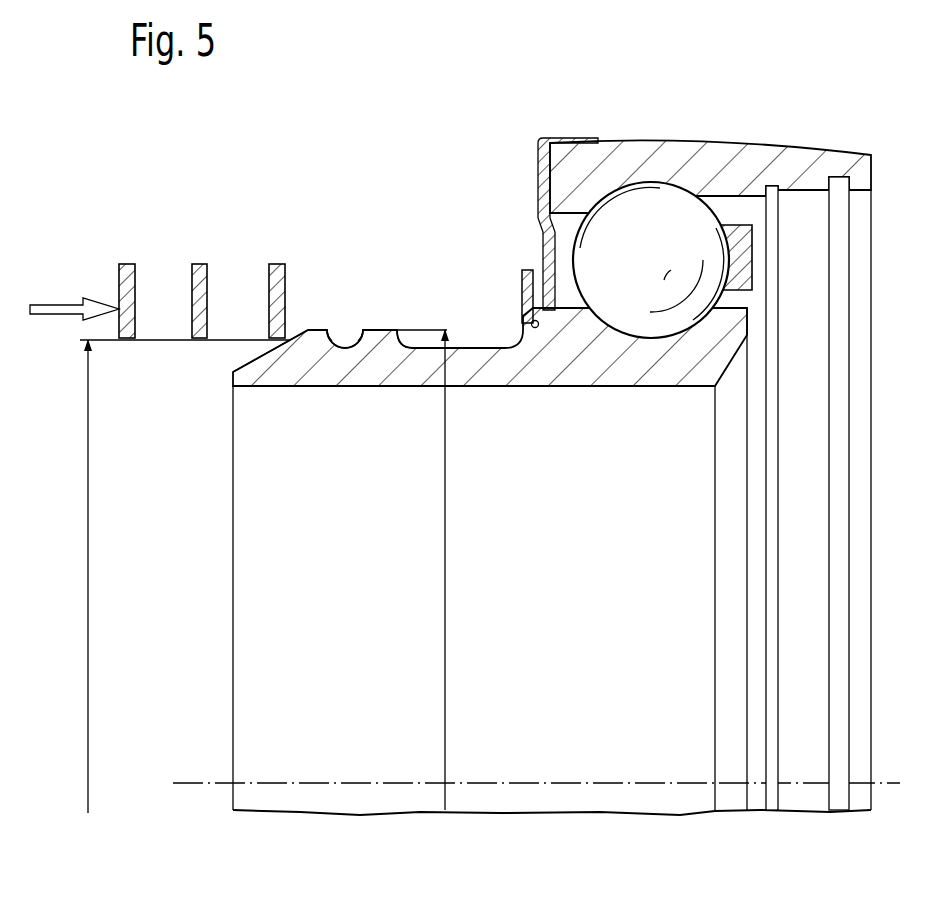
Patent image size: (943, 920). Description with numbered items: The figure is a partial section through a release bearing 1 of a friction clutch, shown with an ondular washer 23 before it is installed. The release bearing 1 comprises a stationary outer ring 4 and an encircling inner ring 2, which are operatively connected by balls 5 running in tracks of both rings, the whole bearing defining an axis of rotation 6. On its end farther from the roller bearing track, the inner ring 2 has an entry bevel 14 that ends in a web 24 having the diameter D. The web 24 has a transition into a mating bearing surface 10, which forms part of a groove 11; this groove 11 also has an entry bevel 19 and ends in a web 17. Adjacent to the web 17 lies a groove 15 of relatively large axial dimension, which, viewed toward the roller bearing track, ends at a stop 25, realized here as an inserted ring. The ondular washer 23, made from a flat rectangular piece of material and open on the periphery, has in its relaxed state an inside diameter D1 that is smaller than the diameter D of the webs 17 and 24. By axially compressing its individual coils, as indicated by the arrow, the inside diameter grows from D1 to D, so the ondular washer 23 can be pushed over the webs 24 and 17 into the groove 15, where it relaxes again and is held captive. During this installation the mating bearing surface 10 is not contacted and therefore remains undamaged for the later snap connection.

The release bearing 1 is at (568, 475).
The inner ring 2 is at (720, 348).
The outer ring 4 is at (767, 158).
The balls 5 is at (718, 271).
The axis of rotation 6 is at (837, 818).
The mating bearing surface 10 is at (340, 326).
The groove 11 is at (369, 323).
The entry bevel 14 is at (245, 365).
The groove 15 is at (472, 346).
The web 17 is at (391, 327).
The entry bevel 19 is at (356, 326).
The ondular washer 23 is at (275, 262).
The web 24 is at (315, 328).
The stop 25 is at (527, 270).
The diameter of the webs D is at (445, 600).
The inside diameter of the ondular washer D1 is at (88, 563).